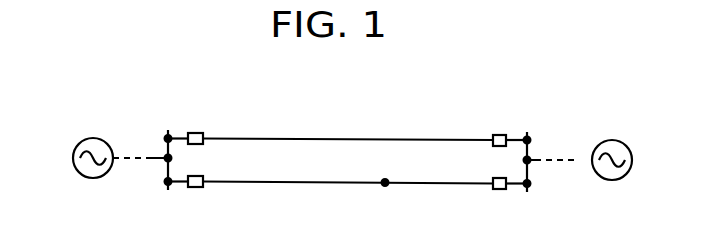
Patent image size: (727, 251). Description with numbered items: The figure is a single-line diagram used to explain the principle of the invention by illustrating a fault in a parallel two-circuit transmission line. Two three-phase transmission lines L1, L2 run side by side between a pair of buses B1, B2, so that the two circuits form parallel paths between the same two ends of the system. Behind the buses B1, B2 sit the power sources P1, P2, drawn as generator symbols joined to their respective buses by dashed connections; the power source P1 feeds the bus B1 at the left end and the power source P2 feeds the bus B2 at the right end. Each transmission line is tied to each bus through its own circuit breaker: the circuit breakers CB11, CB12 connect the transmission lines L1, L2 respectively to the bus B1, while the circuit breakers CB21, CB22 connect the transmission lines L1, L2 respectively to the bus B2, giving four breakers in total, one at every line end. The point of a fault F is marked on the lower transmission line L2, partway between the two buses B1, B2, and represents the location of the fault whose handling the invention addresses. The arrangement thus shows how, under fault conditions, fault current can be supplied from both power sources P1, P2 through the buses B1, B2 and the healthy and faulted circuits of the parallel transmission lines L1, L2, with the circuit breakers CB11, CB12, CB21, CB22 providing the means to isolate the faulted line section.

The power source P1 is at (93, 137).
The power source P2 is at (612, 139).
The bus B1 is at (166, 137).
The bus B2 is at (529, 134).
The circuit breaker CB11 is at (195, 133).
The circuit breaker CB12 is at (196, 187).
The circuit breaker CB21 is at (500, 135).
The circuit breaker CB22 is at (500, 189).
The three-phase transmission line L1 is at (312, 138).
The three-phase transmission line L2 is at (315, 183).
The point of a fault F is at (382, 215).